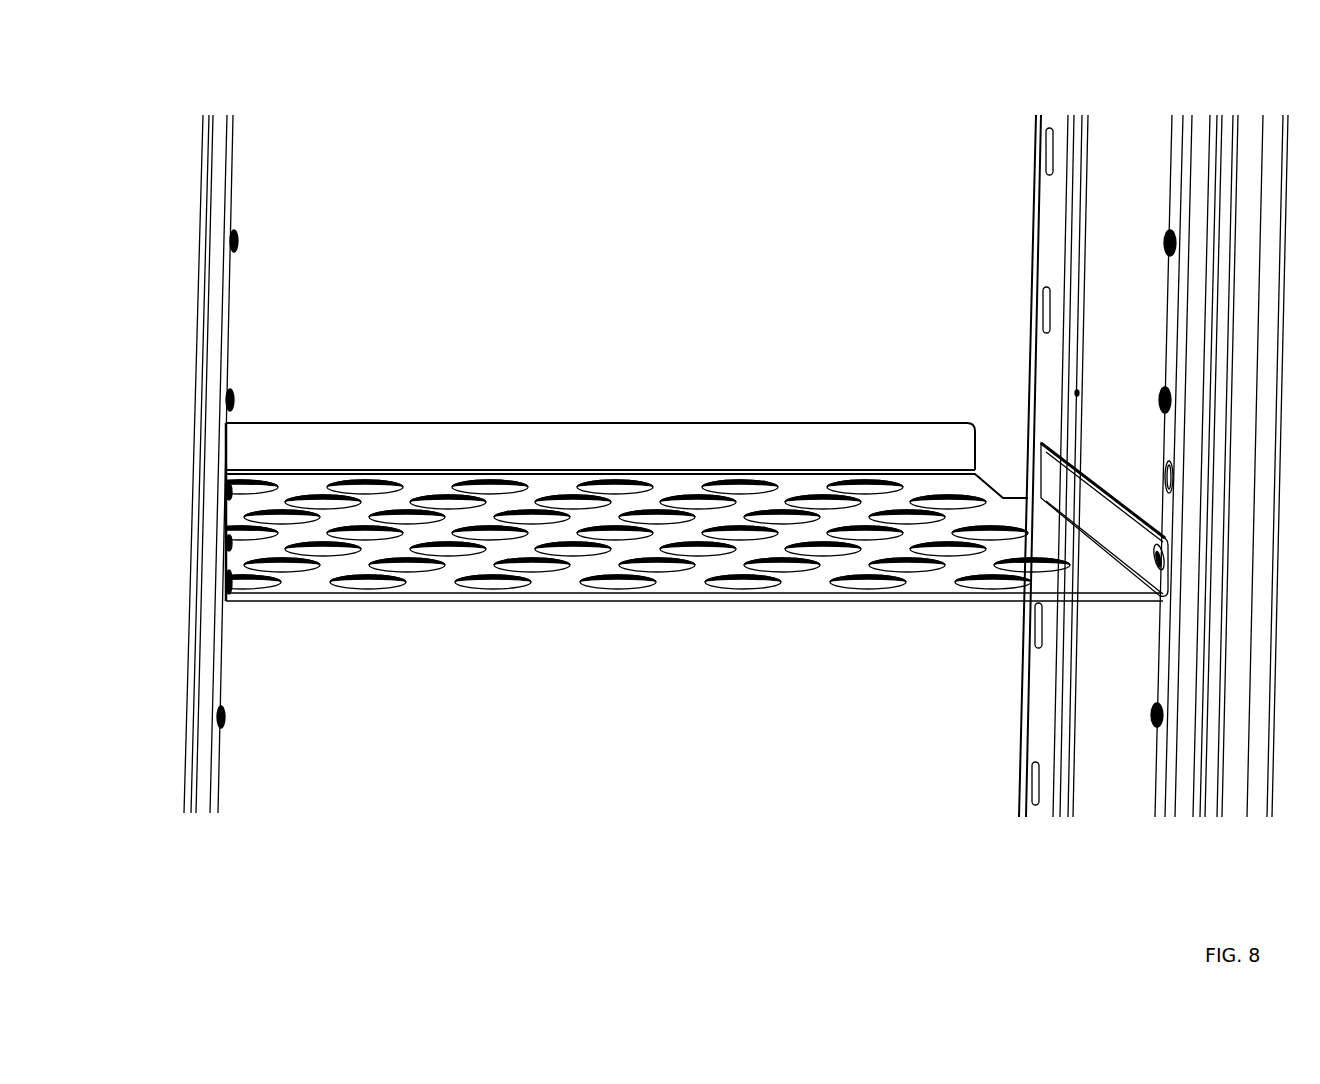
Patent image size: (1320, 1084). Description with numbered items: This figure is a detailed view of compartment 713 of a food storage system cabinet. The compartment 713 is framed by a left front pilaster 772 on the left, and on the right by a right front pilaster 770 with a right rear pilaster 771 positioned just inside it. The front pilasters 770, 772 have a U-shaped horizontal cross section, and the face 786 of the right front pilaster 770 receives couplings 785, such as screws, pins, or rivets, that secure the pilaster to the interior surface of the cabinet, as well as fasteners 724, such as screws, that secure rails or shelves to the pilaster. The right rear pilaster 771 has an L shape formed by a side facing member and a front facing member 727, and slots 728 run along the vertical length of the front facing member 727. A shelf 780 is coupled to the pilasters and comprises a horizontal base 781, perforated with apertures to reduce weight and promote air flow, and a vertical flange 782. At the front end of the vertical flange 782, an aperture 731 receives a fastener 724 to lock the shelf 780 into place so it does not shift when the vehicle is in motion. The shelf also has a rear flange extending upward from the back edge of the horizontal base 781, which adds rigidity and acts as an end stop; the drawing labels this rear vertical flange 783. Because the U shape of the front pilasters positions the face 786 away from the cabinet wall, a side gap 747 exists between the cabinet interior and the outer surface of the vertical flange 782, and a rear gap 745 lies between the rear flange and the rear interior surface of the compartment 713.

The compartment 713 is at (325, 104).
The fasteners 724 is at (1152, 717).
The front facing member 727 is at (1036, 125).
The slots 728 is at (1043, 300).
The aperture 731 is at (1130, 557).
The rear gap 745 is at (543, 400).
The side gap 747 is at (1101, 477).
The right front pilaster 770 is at (1163, 812).
The right rear pilaster 771 is at (1043, 813).
The left front pilaster 772 is at (200, 805).
The shelf 780 is at (559, 650).
The horizontal base 781 is at (450, 598).
The vertical flange 782 is at (1063, 503).
The vertical flange 783 is at (228, 567).
The couplings 785 is at (1163, 467).
The face 786 is at (1178, 130).